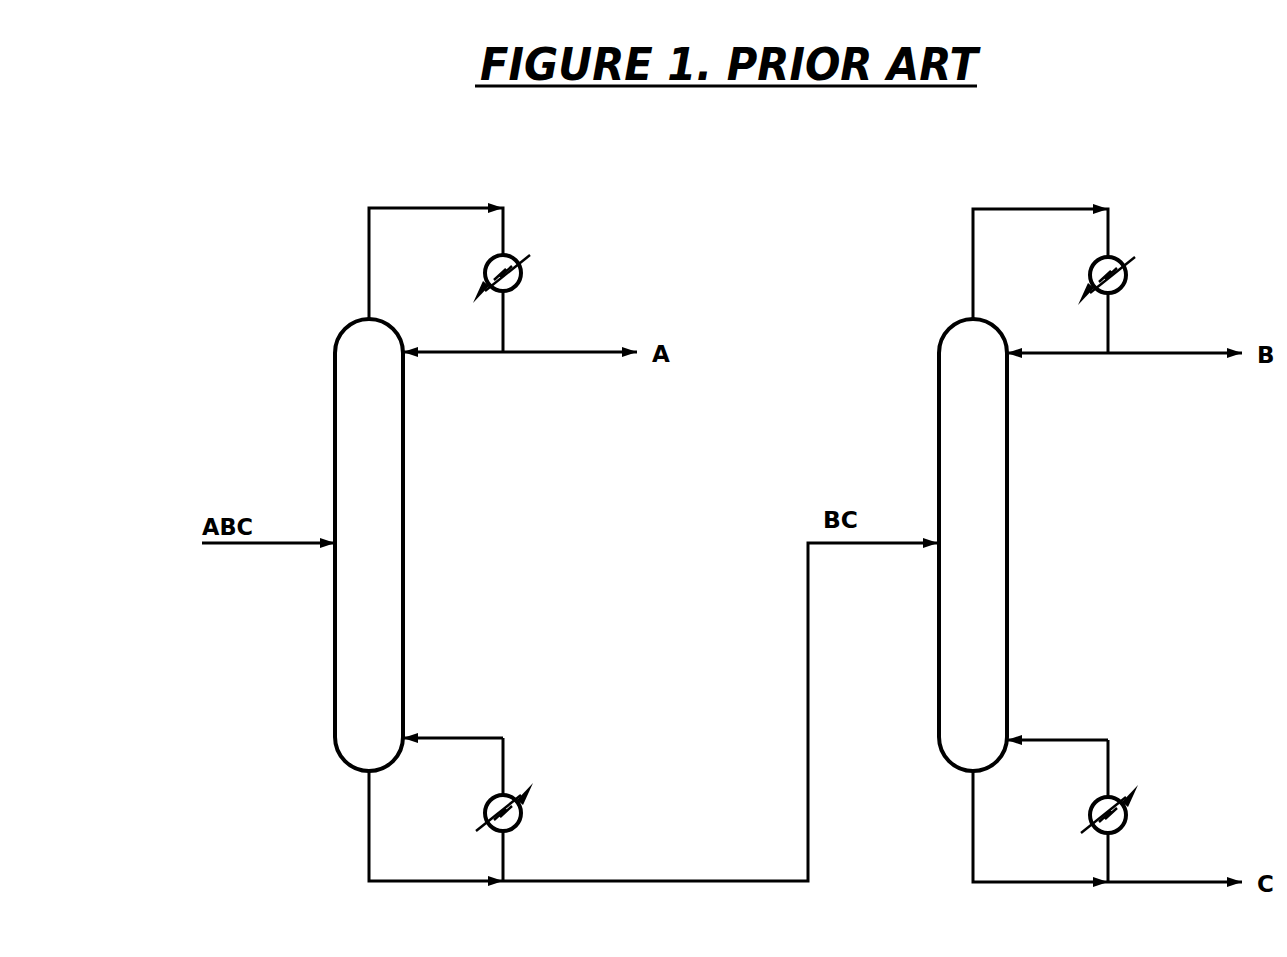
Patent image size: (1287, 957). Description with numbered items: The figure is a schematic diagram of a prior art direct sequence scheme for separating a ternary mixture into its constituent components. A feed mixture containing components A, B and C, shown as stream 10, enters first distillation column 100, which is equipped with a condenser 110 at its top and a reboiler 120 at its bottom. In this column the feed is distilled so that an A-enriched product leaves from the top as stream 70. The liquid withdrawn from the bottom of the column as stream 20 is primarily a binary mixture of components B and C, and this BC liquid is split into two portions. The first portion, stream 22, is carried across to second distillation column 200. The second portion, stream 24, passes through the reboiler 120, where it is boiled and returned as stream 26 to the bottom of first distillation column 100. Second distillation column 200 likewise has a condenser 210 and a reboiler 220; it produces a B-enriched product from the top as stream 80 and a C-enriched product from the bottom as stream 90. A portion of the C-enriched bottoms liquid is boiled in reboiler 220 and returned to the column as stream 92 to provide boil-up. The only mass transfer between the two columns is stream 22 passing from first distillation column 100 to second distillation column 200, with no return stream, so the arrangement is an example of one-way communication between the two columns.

The feed stream 10 is at (246, 546).
The bottom liquid stream 20 is at (368, 823).
The first portion stream 22 is at (597, 882).
The second portion stream 24 is at (503, 846).
The boiled return stream 26 is at (461, 738).
The A-enriched product stream 70 is at (536, 354).
The B-enriched product stream 80 is at (1158, 355).
The C-enriched product stream 90 is at (1139, 883).
The boiled bottoms stream 92 is at (1073, 740).
The first distillation column 100 is at (404, 548).
The condenser 110 is at (522, 272).
The reboiler 120 is at (522, 810).
The second distillation column 200 is at (1008, 578).
The condenser 210 is at (1127, 282).
The reboiler 220 is at (1127, 812).